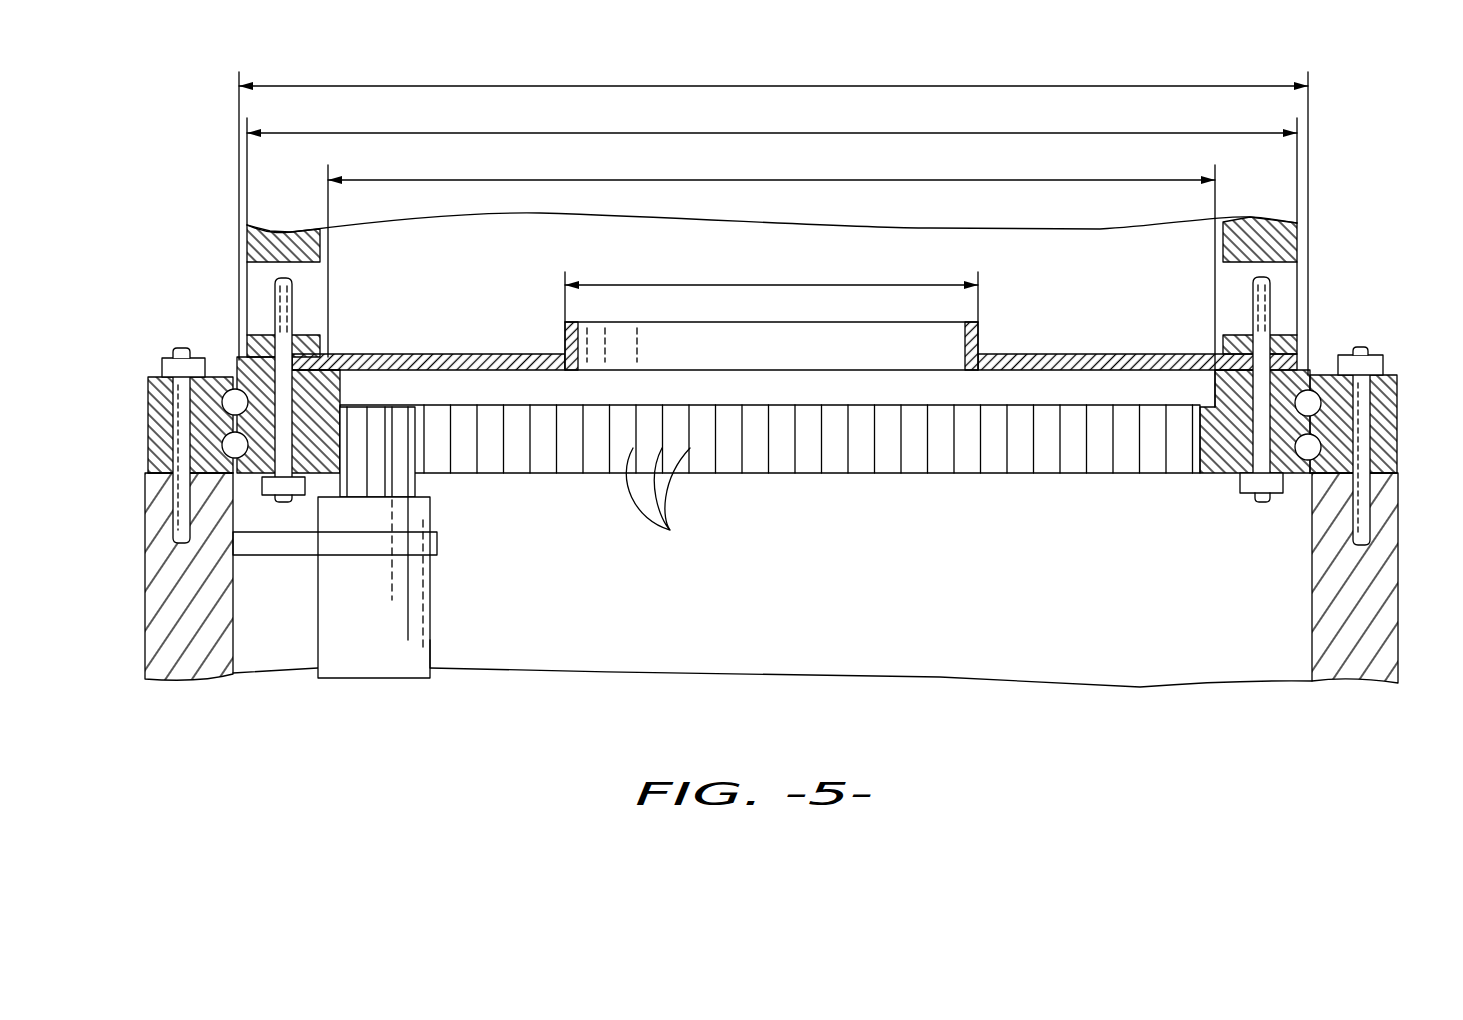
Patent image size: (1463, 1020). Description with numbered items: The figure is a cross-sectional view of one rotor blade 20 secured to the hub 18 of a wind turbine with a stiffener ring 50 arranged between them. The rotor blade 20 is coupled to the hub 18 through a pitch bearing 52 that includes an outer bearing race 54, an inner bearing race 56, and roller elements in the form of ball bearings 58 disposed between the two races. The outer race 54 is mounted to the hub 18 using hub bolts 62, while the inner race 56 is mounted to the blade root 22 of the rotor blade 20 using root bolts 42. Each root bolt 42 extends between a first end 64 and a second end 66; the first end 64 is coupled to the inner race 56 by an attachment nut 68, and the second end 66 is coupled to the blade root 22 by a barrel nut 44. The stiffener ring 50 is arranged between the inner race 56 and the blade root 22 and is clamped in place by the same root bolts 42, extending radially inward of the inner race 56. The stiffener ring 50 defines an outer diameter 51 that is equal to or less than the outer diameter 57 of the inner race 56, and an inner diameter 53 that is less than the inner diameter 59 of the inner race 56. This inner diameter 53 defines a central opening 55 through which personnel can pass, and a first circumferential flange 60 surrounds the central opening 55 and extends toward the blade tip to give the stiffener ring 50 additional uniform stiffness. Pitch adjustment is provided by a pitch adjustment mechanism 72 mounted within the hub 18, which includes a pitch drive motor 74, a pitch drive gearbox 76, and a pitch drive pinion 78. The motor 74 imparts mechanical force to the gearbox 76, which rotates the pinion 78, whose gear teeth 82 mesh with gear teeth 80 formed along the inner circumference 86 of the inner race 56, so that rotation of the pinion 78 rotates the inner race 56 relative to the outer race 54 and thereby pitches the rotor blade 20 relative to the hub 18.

The hub 18 is at (141, 592).
The rotor blade 20 is at (1302, 235).
The blade root 22 is at (1235, 232).
The root bolt 42 is at (243, 362).
The barrel nut 44 is at (245, 280).
The stiffener ring 50 is at (505, 354).
The outer diameter 51 is at (977, 132).
The pitch bearing 52 is at (141, 415).
The inner diameter 53 is at (790, 285).
The outer bearing race 54 is at (158, 428).
The central opening 55 is at (790, 358).
The inner bearing race 56 is at (318, 388).
The outer diameter 57 is at (810, 85).
The ball bearings 58 is at (1321, 447).
The inner diameter 59 is at (870, 178).
The first circumferential flange 60 is at (978, 340).
The hub bolt 62 is at (173, 397).
The first end 64 is at (1262, 502).
The second end 66 is at (1253, 293).
The attachment nut 68 is at (1240, 480).
The pitch adjustment mechanism 72 is at (435, 642).
The pitch drive motor 74 is at (373, 653).
The pitch drive gearbox 76 is at (433, 517).
The pitch drive pinion 78 is at (420, 480).
The gear teeth 80 is at (672, 504).
The gear teeth 82 is at (397, 452).
The inner circumference 86 is at (906, 479).